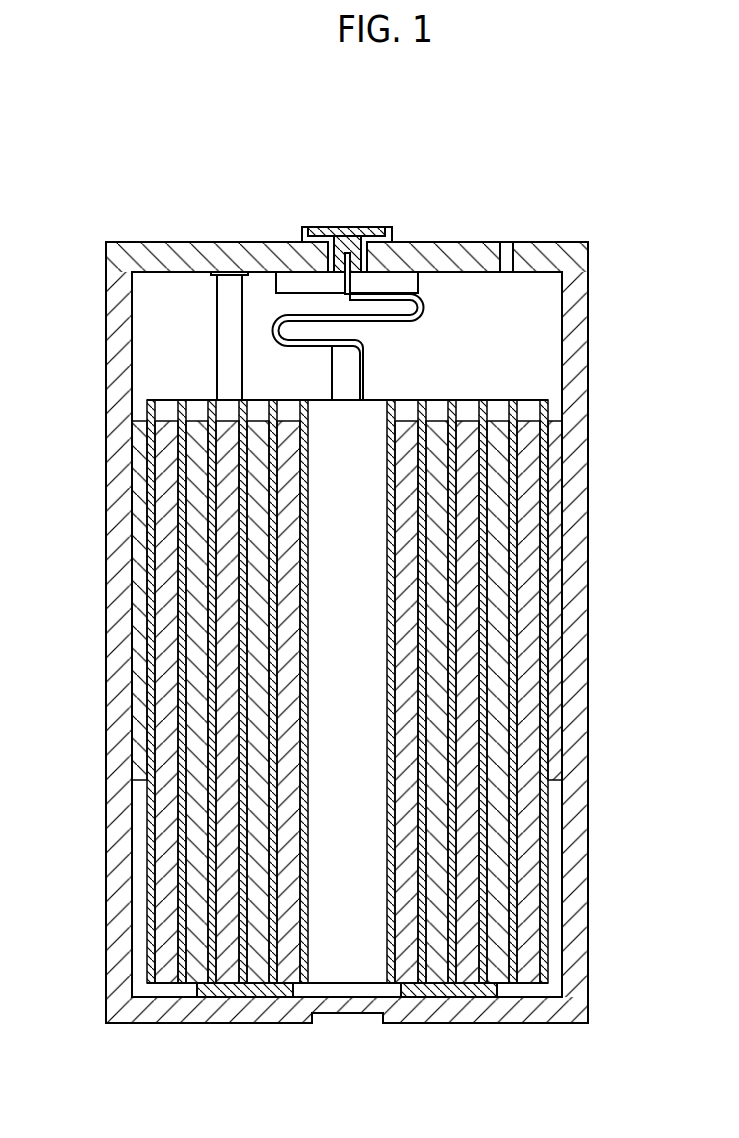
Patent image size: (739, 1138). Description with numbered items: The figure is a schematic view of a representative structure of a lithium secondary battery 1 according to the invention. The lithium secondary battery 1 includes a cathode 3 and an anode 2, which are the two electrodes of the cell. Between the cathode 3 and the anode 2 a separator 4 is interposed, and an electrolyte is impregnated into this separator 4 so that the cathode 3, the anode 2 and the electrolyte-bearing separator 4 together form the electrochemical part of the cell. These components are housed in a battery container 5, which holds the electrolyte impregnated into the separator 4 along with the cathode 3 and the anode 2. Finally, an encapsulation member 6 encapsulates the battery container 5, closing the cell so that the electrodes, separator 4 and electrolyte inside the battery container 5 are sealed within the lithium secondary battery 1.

The lithium secondary battery 1 is at (382, 204).
The anode 2 is at (527, 860).
The cathode 3 is at (185, 867).
The separator 4 is at (180, 928).
The battery container 5 is at (118, 332).
The encapsulation member 6 is at (304, 226).